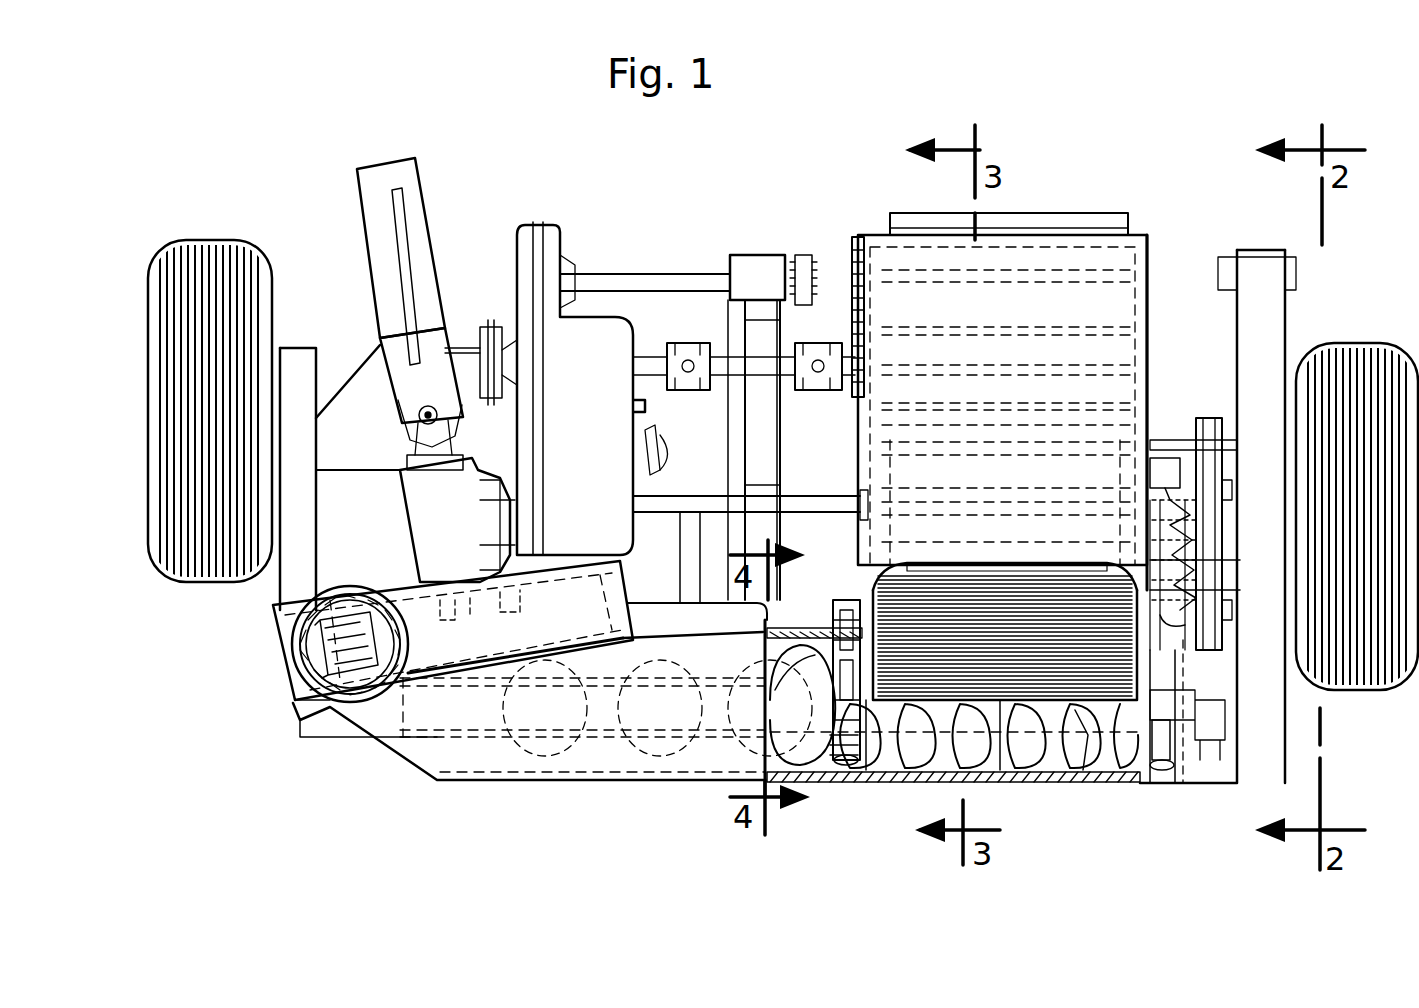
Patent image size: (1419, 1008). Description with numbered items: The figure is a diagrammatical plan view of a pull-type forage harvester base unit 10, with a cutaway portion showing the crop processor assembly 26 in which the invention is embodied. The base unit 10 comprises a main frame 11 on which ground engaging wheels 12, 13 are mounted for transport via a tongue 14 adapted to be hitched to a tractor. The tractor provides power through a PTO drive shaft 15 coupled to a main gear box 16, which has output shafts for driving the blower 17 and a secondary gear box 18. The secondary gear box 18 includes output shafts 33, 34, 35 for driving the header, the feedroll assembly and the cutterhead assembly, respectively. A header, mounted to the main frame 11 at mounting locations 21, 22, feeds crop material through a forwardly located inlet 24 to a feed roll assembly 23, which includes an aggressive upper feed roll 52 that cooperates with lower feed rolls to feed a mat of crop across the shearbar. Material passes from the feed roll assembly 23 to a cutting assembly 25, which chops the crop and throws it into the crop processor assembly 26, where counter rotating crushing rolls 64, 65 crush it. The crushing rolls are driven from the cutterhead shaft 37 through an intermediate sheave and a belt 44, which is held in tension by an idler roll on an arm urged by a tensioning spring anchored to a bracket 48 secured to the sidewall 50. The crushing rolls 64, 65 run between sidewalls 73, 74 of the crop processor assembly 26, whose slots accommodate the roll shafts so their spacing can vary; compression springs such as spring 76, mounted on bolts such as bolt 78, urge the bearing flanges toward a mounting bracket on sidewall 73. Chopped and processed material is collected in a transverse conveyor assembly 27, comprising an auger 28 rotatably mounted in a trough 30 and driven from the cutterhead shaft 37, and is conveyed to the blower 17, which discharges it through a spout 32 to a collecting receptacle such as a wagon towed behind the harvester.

The pull-type forage harvester base unit 10 is at (540, 172).
The main frame 11 is at (1256, 765).
The ground engaging wheel 12 is at (185, 585).
The ground engaging wheel 13 is at (1355, 343).
The tongue 14 is at (360, 185).
The PTO drive shaft 15 is at (405, 240).
The main gear box 16 is at (440, 513).
The blower 17 is at (466, 672).
The secondary gear box 18 is at (598, 390).
The header mounting location 21 is at (745, 262).
The header mounting location 22 is at (1265, 255).
The feed roll assembly 23 is at (1070, 300).
The inlet 24 is at (1027, 208).
The cutting assembly 25 is at (982, 470).
The crop processor assembly 26 is at (1118, 720).
The transverse conveyor assembly 27 is at (880, 790).
The auger 28 is at (1040, 785).
The trough 30 is at (1010, 790).
The spout 32 is at (315, 680).
The output shaft 33 is at (683, 275).
The output shaft 34 is at (765, 360).
The output shaft 35 is at (798, 505).
The cutterhead shaft 37 is at (998, 500).
The belt 44 is at (1205, 420).
The bracket 48 is at (1166, 470).
The sidewall 50 is at (1150, 296).
The upper feed roll 52 is at (1048, 222).
The crushing roll 64 is at (895, 760).
The crushing roll 65 is at (905, 580).
The sidewall 73 is at (850, 742).
The sidewall 74 is at (1150, 775).
The compression spring 76 is at (840, 735).
The bolt 78 is at (835, 770).